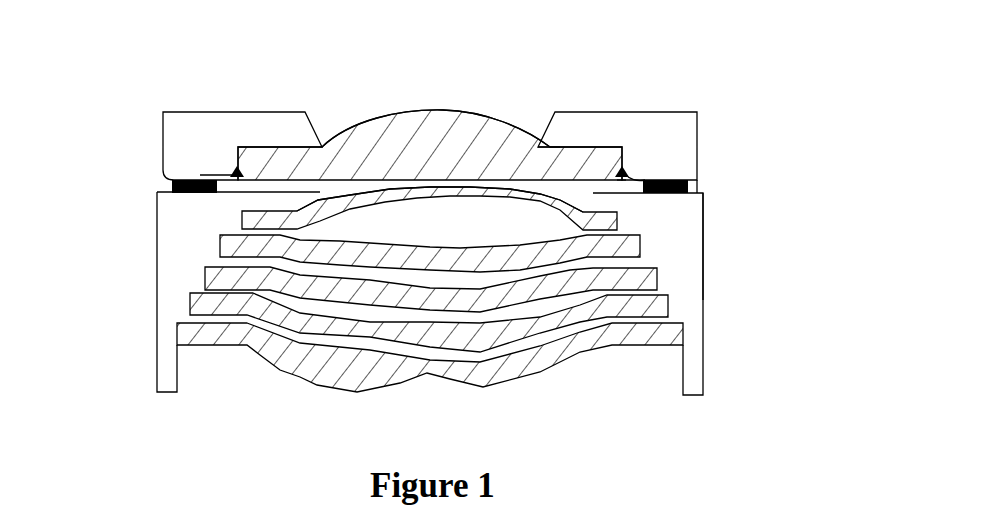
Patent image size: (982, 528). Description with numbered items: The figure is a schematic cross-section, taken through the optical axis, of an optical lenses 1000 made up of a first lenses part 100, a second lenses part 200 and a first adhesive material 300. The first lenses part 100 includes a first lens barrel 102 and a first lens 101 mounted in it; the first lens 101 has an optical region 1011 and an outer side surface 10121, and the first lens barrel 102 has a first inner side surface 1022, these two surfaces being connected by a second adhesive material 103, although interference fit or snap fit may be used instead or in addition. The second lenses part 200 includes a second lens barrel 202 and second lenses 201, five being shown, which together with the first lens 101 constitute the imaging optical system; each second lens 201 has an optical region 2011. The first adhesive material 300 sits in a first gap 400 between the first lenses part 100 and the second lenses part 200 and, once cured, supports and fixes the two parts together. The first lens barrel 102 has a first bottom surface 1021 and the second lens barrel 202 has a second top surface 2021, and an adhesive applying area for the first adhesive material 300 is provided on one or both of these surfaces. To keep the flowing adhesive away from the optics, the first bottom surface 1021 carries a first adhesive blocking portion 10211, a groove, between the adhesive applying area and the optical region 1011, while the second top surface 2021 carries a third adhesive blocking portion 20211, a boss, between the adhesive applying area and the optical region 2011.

The optical lenses 1000 is at (715, 100).
The first lenses part 100 is at (155, 147).
The first lens 101 is at (428, 98).
The optical region 1011 is at (453, 157).
The first lens barrel 102 is at (238, 145).
The first bottom surface 1021 is at (663, 178).
The first inner side surface 1022 is at (622, 172).
The outer side surface 10121 is at (622, 172).
The first adhesive blocking portion 10211 is at (213, 168).
The second adhesive material 103 is at (621, 178).
The first gap 400 is at (230, 176).
The first adhesive material 300 is at (170, 186).
The second lenses part 200 is at (702, 297).
The second lens 201 is at (417, 193).
The optical region 2011 is at (455, 202).
The second lens barrel 202 is at (172, 237).
The second top surface 2021 is at (693, 192).
The third adhesive blocking portion 20211 is at (170, 227).